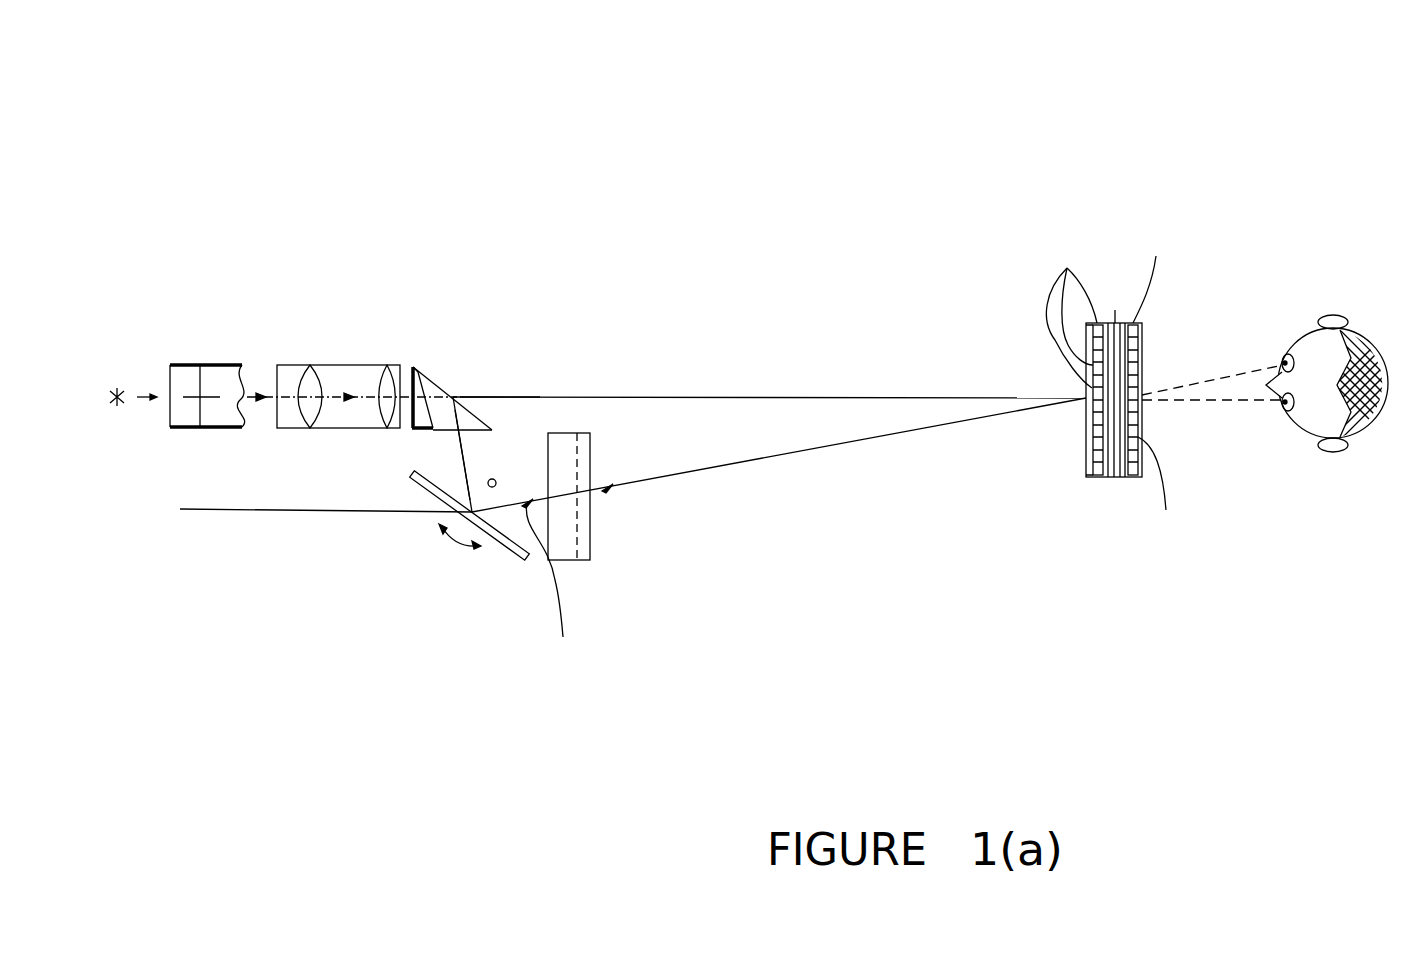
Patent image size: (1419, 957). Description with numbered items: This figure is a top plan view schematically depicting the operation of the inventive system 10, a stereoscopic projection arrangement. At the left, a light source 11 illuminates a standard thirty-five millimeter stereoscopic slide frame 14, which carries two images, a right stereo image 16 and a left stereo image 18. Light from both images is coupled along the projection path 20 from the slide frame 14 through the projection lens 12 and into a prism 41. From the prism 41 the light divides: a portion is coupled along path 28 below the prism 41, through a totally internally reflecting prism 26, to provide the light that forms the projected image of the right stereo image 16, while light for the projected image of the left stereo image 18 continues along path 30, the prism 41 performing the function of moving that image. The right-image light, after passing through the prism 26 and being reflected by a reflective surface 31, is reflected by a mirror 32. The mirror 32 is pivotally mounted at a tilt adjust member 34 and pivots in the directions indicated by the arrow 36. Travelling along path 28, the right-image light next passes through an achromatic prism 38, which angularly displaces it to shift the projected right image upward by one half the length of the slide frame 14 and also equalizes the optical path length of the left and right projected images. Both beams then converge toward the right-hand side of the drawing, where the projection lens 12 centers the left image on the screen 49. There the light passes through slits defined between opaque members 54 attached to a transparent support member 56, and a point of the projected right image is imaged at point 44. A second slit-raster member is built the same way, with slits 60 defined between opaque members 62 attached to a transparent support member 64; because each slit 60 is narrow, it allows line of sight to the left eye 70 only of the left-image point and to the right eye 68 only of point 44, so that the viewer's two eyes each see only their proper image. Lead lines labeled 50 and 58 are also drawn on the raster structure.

The inventive system 10 is at (795, 290).
The light source 11 is at (115, 377).
The projection lens 12 is at (368, 363).
The stereoscopic slide frame 14 is at (230, 350).
The right stereo image 16 is at (192, 390).
The left stereo image 18 is at (240, 377).
The projection path 20 is at (263, 405).
The totally internally reflecting prism 26 is at (443, 388).
The path 28 is at (463, 460).
The path 30 is at (552, 397).
The reflective surface 31 is at (483, 417).
The mirror 32 is at (497, 543).
The tilt adjust member 34 is at (495, 480).
The arrow 36 is at (445, 538).
The achromatic prism 38 is at (580, 532).
The prism 41 is at (418, 390).
The point 44 is at (1120, 422).
The screen 49 is at (1038, 310).
The electrical leads 50 is at (1071, 313).
The opaque members 54 is at (1103, 415).
The transparent support member 56 is at (1085, 425).
The right electrode array 58 is at (1138, 418).
The slits 60 is at (1140, 387).
The opaque members 62 is at (1138, 463).
The transparent support member 64 is at (1115, 323).
The right eye 68 is at (1275, 355).
The left eye 70 is at (1277, 413).